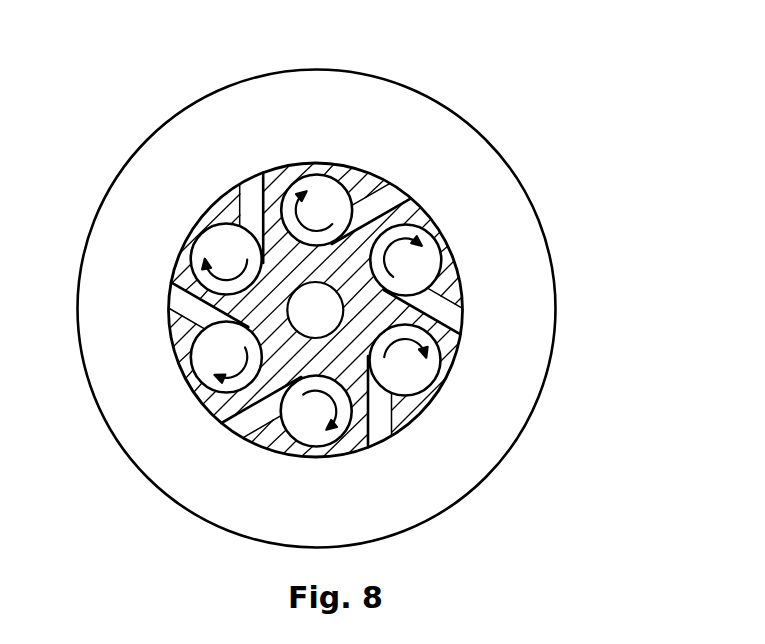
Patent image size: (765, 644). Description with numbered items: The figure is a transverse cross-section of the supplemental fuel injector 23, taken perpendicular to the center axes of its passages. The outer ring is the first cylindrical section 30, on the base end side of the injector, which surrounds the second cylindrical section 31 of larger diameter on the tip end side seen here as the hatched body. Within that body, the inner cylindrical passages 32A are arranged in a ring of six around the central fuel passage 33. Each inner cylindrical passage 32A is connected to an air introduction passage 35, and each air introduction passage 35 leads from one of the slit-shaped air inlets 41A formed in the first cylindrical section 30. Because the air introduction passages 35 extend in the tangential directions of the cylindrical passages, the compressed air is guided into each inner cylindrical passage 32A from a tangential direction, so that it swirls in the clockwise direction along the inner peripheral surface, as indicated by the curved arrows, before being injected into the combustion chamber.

The supplemental fuel injector 23 is at (531, 91).
The first cylindrical section 30 is at (553, 348).
The second cylindrical section 31 is at (432, 402).
The inner cylindrical passages 32A is at (327, 178).
The fuel passage 33 is at (300, 300).
The air introduction passages 35 is at (255, 202).
The air inlets 41A is at (263, 176).